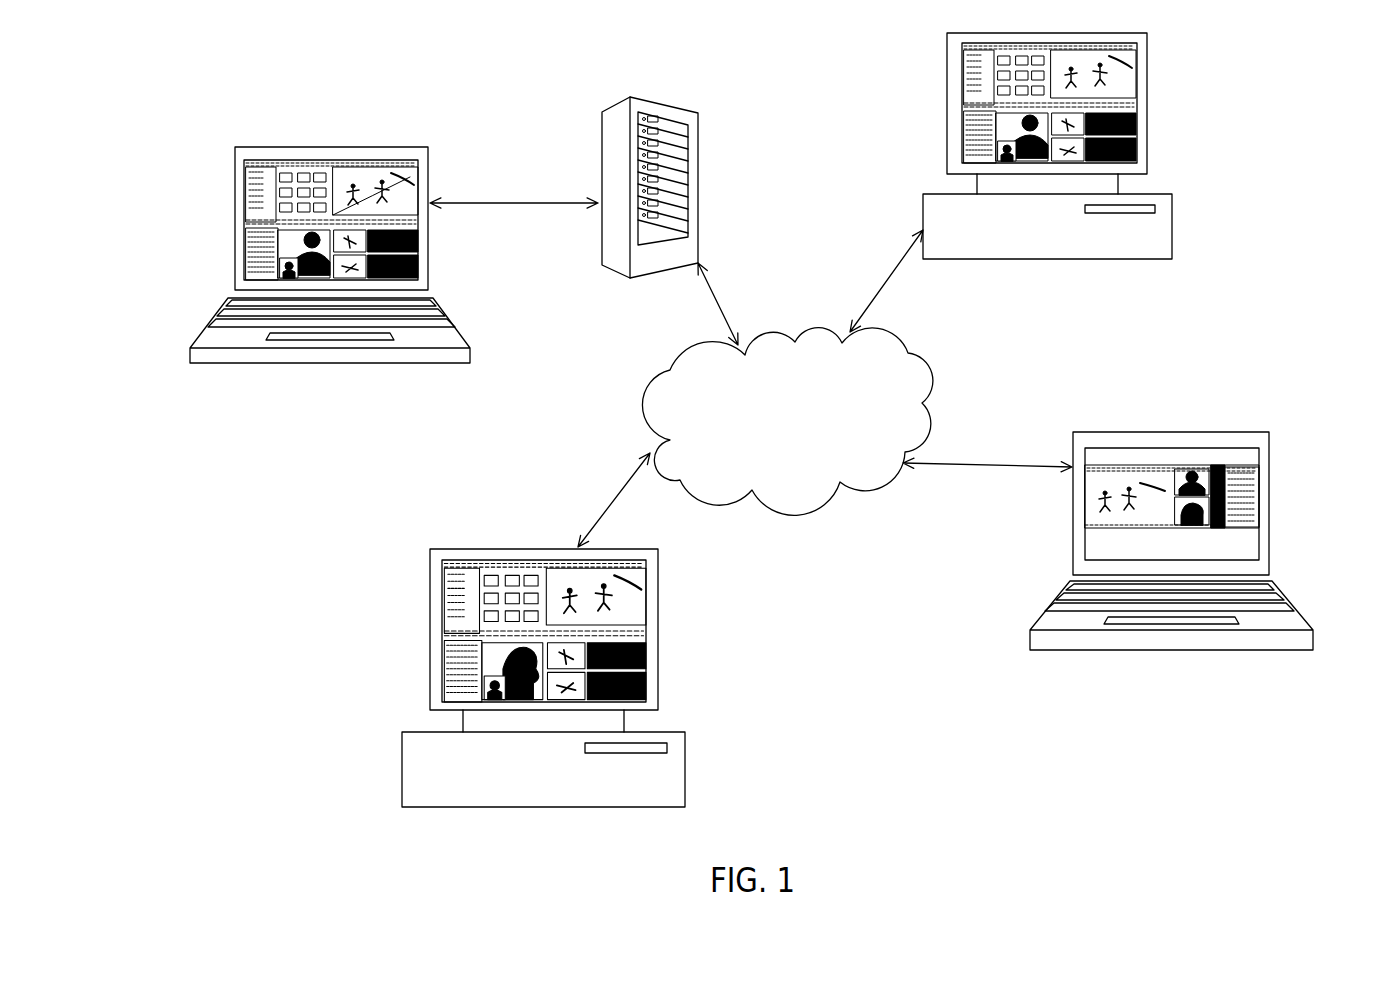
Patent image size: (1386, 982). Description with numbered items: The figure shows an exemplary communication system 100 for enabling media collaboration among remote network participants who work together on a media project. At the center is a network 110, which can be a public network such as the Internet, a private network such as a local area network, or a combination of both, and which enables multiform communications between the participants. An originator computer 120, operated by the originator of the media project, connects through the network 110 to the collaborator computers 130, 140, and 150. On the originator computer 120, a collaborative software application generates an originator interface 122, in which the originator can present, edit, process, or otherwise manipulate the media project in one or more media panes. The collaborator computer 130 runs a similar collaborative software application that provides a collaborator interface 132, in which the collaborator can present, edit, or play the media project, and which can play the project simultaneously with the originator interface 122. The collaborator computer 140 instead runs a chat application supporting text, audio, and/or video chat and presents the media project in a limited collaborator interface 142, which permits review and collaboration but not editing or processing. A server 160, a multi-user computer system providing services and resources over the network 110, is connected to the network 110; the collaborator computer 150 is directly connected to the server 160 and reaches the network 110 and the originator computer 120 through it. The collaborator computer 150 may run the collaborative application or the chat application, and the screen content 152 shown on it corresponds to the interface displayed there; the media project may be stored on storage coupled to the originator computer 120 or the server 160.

The communication system 100 is at (913, 716).
The network 110 is at (838, 482).
The originator computer 120 is at (494, 639).
The originator interface 122 is at (543, 627).
The collaborator computer 130 is at (1062, 146).
The collaborator interface 132 is at (1043, 98).
The collaborator computer 140 is at (1192, 507).
The limited collaborator interface 142 is at (1160, 497).
The collaborator computer 150 is at (321, 211).
The user interface display 152 is at (387, 197).
The server 160 is at (653, 92).